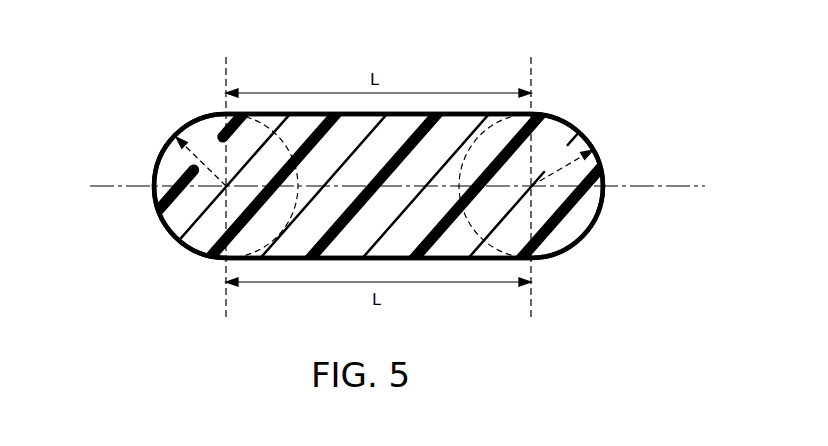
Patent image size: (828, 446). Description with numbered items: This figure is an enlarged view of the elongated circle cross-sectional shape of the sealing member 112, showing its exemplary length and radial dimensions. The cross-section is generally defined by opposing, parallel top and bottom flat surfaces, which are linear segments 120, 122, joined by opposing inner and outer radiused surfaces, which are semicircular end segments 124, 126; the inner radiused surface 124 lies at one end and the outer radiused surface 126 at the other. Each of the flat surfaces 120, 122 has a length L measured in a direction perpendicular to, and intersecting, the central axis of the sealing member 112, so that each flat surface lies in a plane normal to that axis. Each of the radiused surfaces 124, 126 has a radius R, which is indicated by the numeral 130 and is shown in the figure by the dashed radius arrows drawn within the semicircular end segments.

The sealing member 112 is at (583, 128).
The top flat surface 120 is at (321, 113).
The bottom flat surface 122 is at (328, 260).
The inner radiused surface 124 is at (567, 250).
The outer radiused surface 126 is at (187, 250).
The radius R 130 is at (207, 177).